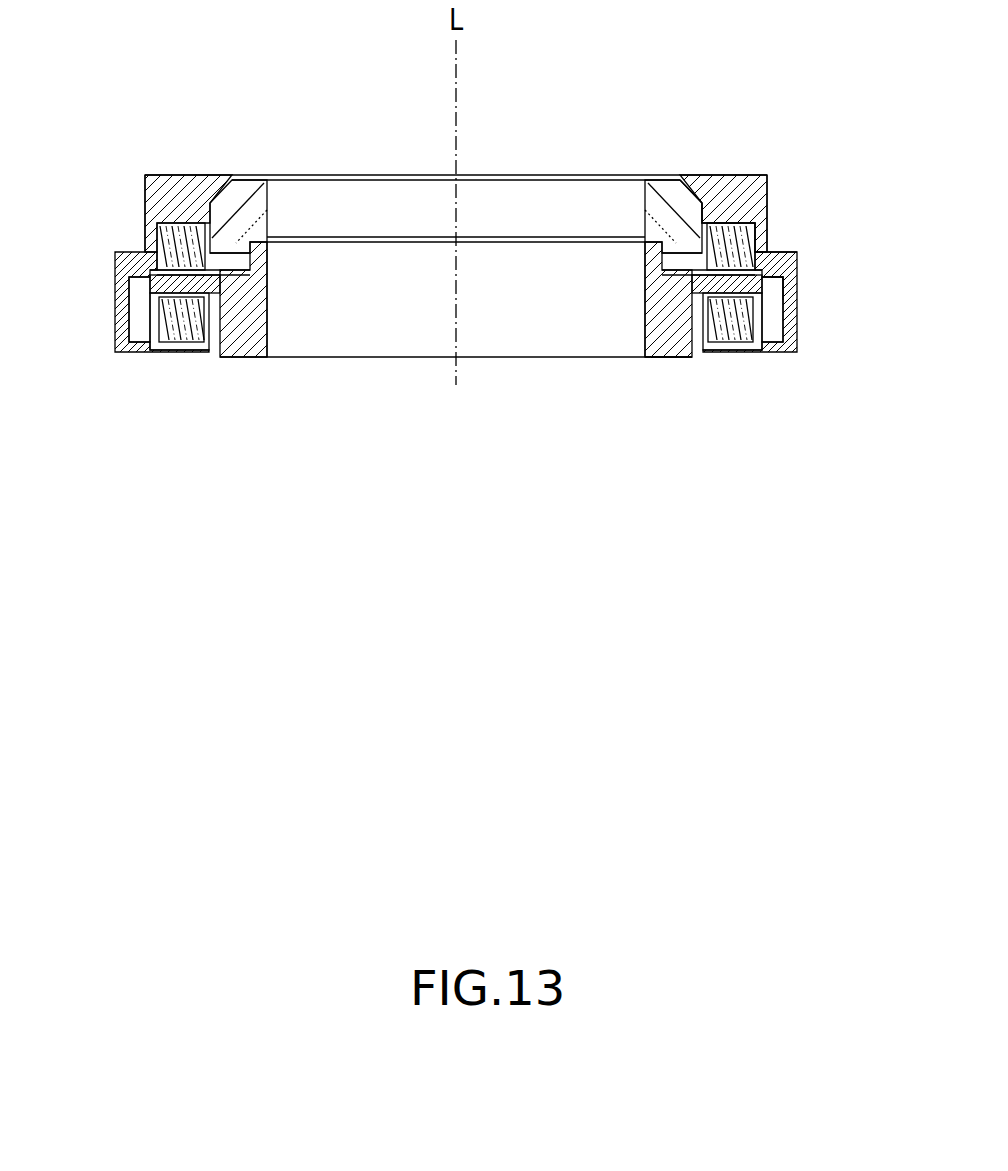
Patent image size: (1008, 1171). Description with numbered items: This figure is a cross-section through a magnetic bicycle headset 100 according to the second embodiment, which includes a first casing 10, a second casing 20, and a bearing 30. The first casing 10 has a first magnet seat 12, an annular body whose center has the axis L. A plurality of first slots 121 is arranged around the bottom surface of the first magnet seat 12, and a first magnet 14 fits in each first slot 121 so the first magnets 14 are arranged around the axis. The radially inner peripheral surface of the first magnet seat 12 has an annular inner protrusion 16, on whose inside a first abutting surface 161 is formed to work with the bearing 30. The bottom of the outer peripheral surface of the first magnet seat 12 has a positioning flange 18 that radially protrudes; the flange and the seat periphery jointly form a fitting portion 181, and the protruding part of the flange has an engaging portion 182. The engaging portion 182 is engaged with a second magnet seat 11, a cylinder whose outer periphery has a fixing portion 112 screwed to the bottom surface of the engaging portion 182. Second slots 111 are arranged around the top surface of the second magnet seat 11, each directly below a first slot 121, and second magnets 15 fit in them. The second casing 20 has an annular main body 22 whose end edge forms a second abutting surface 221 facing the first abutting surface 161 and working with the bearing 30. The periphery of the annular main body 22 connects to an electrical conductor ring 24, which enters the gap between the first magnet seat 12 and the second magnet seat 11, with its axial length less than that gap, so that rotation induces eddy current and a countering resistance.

The magnetic bicycle headset 100 is at (286, 82).
The first casing 10 is at (176, 164).
The second magnet seat 11 is at (777, 328).
The second slots 111 is at (140, 322).
The fixing portion 112 is at (777, 333).
The first magnet seat 12 is at (762, 175).
The first slots 121 is at (157, 237).
The first magnets 14 is at (173, 253).
The second magnets 15 is at (190, 333).
The inner protrusion 16 is at (713, 183).
The first abutting surface 161 is at (698, 186).
The positioning flange 18 is at (783, 262).
The fitting portion 181 is at (776, 250).
The engaging portion 182 is at (776, 288).
The second casing 20 is at (248, 367).
The annular main body 22 is at (493, 345).
The second abutting surface 221 is at (747, 370).
The electrical conductor ring 24 is at (168, 285).
The bearing 30 is at (660, 212).